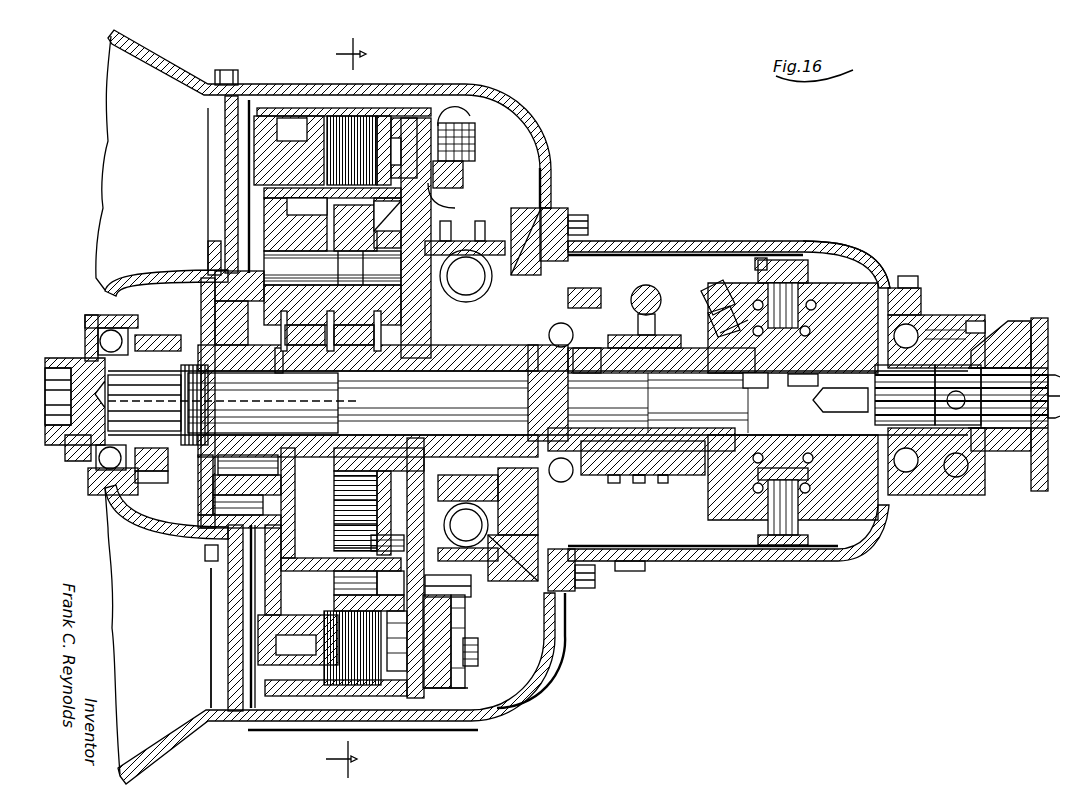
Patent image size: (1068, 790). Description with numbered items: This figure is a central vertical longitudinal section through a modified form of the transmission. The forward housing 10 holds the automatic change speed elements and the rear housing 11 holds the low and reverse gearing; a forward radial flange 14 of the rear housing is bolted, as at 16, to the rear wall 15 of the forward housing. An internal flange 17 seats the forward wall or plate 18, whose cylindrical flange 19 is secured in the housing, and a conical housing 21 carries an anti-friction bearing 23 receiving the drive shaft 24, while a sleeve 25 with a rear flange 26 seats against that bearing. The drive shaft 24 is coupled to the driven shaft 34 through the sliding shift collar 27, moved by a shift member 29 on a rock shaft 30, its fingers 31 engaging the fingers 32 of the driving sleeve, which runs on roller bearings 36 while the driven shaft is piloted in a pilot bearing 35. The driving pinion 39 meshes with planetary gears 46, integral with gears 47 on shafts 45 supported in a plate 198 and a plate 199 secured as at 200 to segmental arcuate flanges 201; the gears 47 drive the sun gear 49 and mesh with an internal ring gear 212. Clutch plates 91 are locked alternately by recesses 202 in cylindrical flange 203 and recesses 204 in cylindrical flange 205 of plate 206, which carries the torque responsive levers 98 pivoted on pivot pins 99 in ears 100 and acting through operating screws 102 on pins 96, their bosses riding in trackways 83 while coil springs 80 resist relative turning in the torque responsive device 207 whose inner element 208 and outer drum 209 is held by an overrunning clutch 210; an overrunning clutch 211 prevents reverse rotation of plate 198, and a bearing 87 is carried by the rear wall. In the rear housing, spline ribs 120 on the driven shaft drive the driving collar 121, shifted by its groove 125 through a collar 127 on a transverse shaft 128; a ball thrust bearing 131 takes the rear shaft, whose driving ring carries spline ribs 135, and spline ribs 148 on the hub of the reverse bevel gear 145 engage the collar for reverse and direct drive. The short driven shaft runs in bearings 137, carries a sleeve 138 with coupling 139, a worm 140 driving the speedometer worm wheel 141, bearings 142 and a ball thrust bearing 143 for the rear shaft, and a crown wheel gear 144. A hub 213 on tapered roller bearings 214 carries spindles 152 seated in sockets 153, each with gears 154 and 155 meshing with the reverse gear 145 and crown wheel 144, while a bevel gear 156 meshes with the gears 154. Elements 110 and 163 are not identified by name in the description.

The forward transmission housing 10 is at (550, 657).
The rear transmission housing 11 is at (768, 555).
The forward radial flange 14 is at (564, 208).
The rear wall 15 is at (556, 621).
The bolted connection 16 is at (585, 573).
The internal flange 17 is at (336, 407).
The forward wall or plate 18 is at (222, 633).
The cylindrical flange 19 is at (208, 684).
The conical housing 21 is at (140, 532).
The anti-friction bearing 23 is at (78, 325).
The drive shaft 24 is at (36, 381).
The sleeve 25 is at (42, 435).
The rear flange 26 is at (78, 476).
The shift collar 27 is at (160, 337).
The shift member 29 is at (130, 279).
The rock shaft 30 is at (196, 259).
The rearwardly projecting fingers 31 is at (150, 464).
The fingers 32 is at (172, 448).
The driven shaft 34 is at (233, 403).
The pilot bearing 35 is at (156, 369).
The roller bearings 36 is at (296, 361).
The driving pinion 39 is at (326, 473).
The shafts 45 is at (371, 268).
The planetary gears 46 is at (332, 268).
The planetary gears 47 is at (345, 268).
The driven gear 49 is at (326, 482).
The coil spring 80 is at (466, 276).
The trackways 83 is at (480, 213).
The bearing 87 is at (580, 311).
The clutch plates 91 is at (358, 106).
The pins 96 is at (462, 117).
The levers 98 is at (456, 169).
The pivot pin 99 is at (435, 681).
The ears 100 is at (458, 665).
The operating screw 102 is at (468, 139).
The clutch drum 110 is at (246, 137).
The spline ribs 120 is at (605, 329).
The driving collar 121 is at (606, 469).
The external groove 125 is at (632, 477).
The collar 127 is at (648, 300).
The transverse shaft 128 is at (638, 277).
The ball thrust bearing 131 is at (562, 389).
The spline ribs 135 is at (712, 326).
The bearings 137 is at (915, 301).
The sleeve 138 is at (996, 343).
The coupling 139 is at (1030, 310).
The worm 140 is at (955, 313).
The worm wheel 141 is at (940, 498).
The bearings 142 is at (961, 395).
The ball thrust bearing 143 is at (979, 396).
The crown wheel gear 144 is at (872, 264).
The reverse bevel gear 145 is at (698, 403).
The spline ribs 148 is at (662, 471).
The spindles 152 is at (836, 285).
The socket 153 is at (750, 250).
The gears 154 is at (700, 313).
The gears 155 is at (708, 281).
The bevel gear 156 is at (800, 381).
The bearing 163 is at (778, 252).
The plate 198 is at (258, 190).
The plate 199 is at (326, 494).
The securing means 200 is at (326, 514).
The segmental arcuate flanges 201 is at (326, 541).
The longitudinal recesses 202 is at (380, 108).
The cylindrical flange 203 is at (310, 100).
The longitudinal recesses 204 is at (465, 219).
The cylindrical flange 205 is at (318, 605).
The plate 206 is at (463, 586).
The torque responsive device 207 is at (530, 205).
The inner element 208 is at (462, 300).
The outer drum 209 is at (505, 563).
The overrunning clutch 210 is at (572, 283).
The overrunning clutch 211 is at (270, 359).
The internal ring gear 212 is at (334, 396).
The hub 213 is at (805, 393).
The tapered roller bearings 214 is at (756, 385).